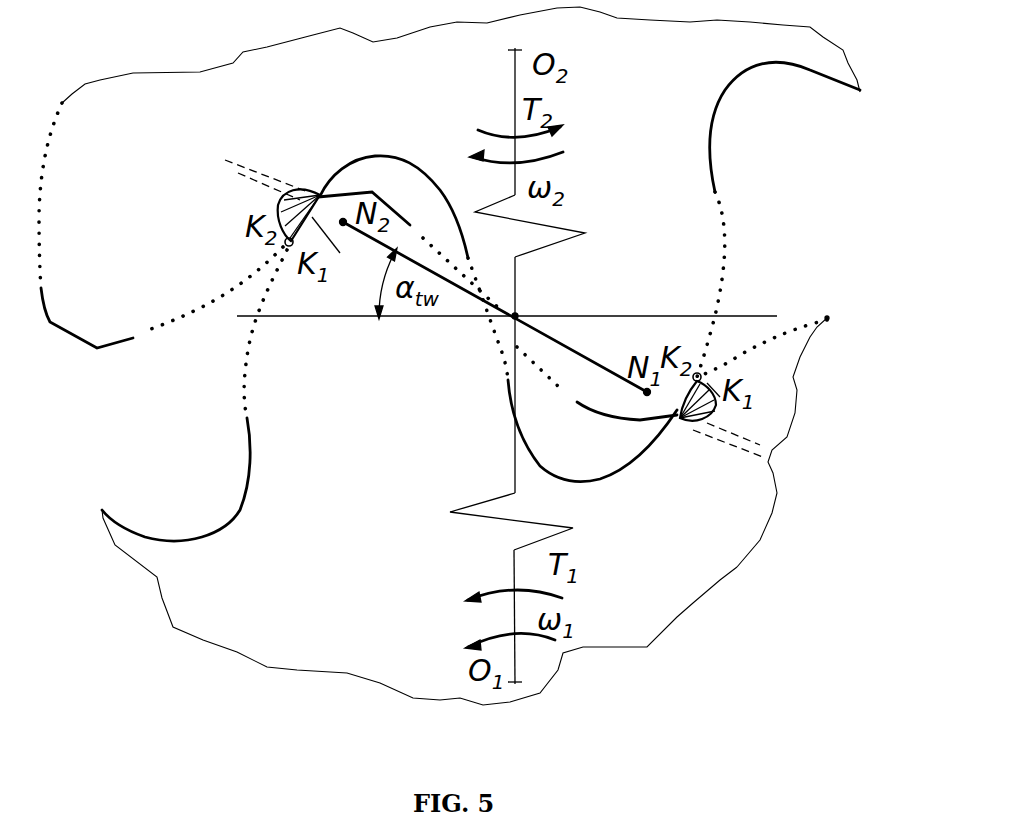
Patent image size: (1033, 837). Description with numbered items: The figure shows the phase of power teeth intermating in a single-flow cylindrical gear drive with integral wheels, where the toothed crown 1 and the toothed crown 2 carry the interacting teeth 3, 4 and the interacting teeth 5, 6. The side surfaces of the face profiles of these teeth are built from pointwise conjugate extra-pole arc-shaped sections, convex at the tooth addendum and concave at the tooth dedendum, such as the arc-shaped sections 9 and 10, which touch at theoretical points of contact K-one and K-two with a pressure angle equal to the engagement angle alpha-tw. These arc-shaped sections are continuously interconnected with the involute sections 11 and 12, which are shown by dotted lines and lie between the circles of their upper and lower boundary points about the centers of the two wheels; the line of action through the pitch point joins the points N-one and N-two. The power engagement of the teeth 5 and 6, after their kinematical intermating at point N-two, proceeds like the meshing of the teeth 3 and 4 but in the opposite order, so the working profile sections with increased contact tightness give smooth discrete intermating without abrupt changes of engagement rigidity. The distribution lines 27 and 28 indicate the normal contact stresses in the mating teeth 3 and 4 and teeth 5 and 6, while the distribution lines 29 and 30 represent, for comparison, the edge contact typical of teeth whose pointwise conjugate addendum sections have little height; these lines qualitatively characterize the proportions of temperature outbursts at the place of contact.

The toothed crown 1 is at (602, 573).
The toothed crown 2 is at (672, 57).
The tooth 3 is at (782, 377).
The tooth 4 is at (653, 198).
The tooth 5 is at (313, 398).
The tooth 6 is at (107, 250).
The pointwise conjugate arc-shaped section 9 is at (672, 400).
The pointwise conjugate arc-shaped section 10 is at (325, 182).
The involute section 11 is at (227, 292).
The involute section 12 is at (253, 327).
The distribution line 27 is at (273, 202).
The distribution line 28 is at (717, 413).
The distribution line 29 is at (230, 163).
The distribution line 30 is at (731, 445).